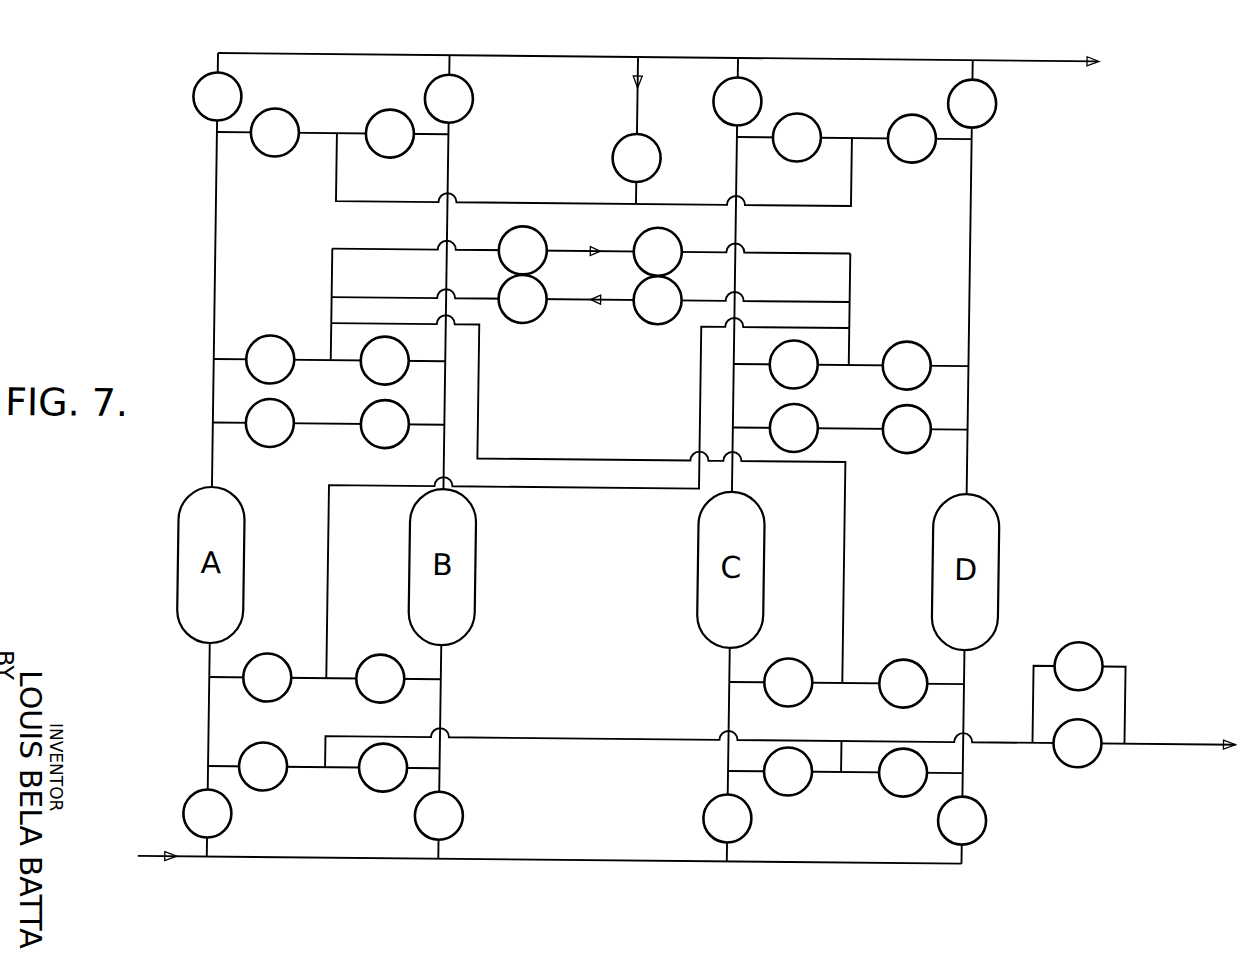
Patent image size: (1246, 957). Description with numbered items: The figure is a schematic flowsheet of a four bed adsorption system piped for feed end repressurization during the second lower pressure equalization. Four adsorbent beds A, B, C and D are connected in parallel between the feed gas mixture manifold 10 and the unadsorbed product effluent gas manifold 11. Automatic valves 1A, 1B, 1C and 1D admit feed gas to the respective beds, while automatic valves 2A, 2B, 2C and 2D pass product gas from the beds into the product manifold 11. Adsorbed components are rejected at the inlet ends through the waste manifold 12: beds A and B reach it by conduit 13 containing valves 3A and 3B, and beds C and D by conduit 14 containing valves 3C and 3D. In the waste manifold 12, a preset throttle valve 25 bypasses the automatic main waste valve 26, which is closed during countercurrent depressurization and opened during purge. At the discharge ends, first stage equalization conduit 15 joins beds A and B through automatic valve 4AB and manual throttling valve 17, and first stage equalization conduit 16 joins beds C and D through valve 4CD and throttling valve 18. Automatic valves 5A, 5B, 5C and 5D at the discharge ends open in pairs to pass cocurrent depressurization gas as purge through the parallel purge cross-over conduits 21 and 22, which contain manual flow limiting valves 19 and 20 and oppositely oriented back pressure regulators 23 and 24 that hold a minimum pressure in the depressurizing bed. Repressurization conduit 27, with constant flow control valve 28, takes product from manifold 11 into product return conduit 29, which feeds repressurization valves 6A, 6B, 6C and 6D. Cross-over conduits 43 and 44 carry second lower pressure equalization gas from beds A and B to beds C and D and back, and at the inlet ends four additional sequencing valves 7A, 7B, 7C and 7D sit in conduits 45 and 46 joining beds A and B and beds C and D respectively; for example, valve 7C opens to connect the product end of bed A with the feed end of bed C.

The automatic valve 1A is at (239, 831).
The automatic valve 1B is at (471, 824).
The automatic valve 1C is at (760, 823).
The automatic valve 1D is at (995, 829).
The automatic valve 2A is at (241, 91).
The automatic valve 2B is at (473, 92).
The automatic valve 2C is at (761, 94).
The automatic valve 2D is at (996, 97).
The automatic valve 3A is at (274, 790).
The automatic valve 3B is at (392, 792).
The automatic valve 3C is at (800, 790).
The automatic valve 3D is at (916, 790).
The automatic valve 4AB is at (283, 444).
The automatic valve 4CD is at (931, 443).
The automatic valve 5A is at (290, 377).
The automatic valve 5B is at (404, 376).
The automatic valve 5C is at (817, 379).
The automatic valve 5D is at (930, 379).
The repressurization valve 6A is at (266, 155).
The repressurization valve 6B is at (381, 155).
The repressurization valve 6C is at (788, 156).
The repressurization valve 6D is at (904, 156).
The sequencing valve 7A is at (284, 654).
The sequencing valve 7B is at (386, 654).
The sequencing valve 7C is at (805, 655).
The sequencing valve 7D is at (911, 654).
The feed gas mixture manifold 10 is at (160, 854).
The unadsorbed product effluent gas manifold 11 is at (1062, 56).
The waste manifold 12 is at (576, 740).
The conduit 13 is at (325, 768).
The conduit 14 is at (845, 769).
The first stage equalization conduit 15 is at (320, 425).
The first stage equalization conduit 16 is at (866, 425).
The manual preset throttling valve 17 is at (397, 446).
The manual preset throttling valve 18 is at (818, 441).
The manual valve 19 is at (681, 237).
The manual valve 20 is at (521, 320).
The purge cross-over conduit 21 is at (628, 252).
The purge cross-over conduit 22 is at (628, 302).
The back pressure regulator 23 is at (509, 235).
The back pressure regulator 24 is at (663, 320).
The preset throttle valve 25 is at (1104, 640).
The main waste valve 26 is at (1103, 753).
The repressurization conduit 27 is at (633, 116).
The constant flow control valve 28 is at (658, 146).
The product return conduit 29 is at (578, 197).
The cross-over conduit 43 is at (557, 455).
The cross-over conduit 44 is at (557, 485).
The conduit 45 is at (326, 679).
The conduit 46 is at (840, 680).